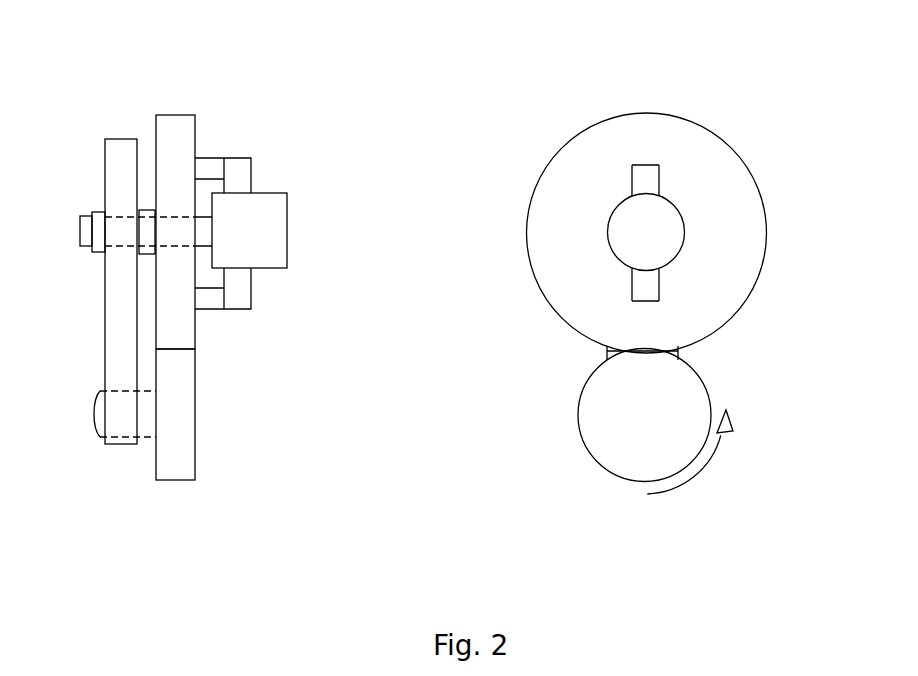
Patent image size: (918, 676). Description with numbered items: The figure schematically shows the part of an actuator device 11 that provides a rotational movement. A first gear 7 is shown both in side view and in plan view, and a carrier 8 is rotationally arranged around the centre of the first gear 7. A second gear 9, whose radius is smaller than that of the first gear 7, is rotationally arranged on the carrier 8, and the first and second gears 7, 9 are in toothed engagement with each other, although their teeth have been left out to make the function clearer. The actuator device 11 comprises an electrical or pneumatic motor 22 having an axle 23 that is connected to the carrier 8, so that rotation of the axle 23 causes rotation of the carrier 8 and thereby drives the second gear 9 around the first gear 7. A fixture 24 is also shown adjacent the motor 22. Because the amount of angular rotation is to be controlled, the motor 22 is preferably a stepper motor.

The first gear 7 is at (188, 105).
The carrier 8 is at (94, 351).
The second gear 9 is at (162, 493).
The actuator device 11 is at (501, 270).
The motor 22 is at (294, 279).
The axle 23 is at (201, 259).
The fixture 24 is at (268, 160).